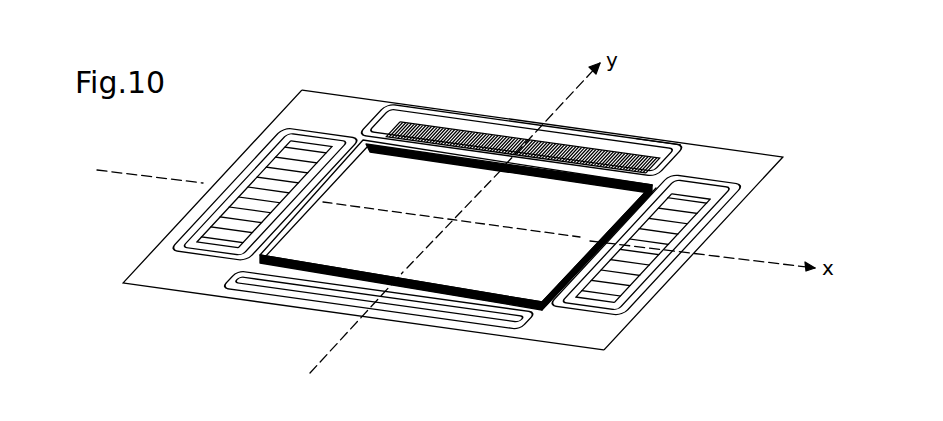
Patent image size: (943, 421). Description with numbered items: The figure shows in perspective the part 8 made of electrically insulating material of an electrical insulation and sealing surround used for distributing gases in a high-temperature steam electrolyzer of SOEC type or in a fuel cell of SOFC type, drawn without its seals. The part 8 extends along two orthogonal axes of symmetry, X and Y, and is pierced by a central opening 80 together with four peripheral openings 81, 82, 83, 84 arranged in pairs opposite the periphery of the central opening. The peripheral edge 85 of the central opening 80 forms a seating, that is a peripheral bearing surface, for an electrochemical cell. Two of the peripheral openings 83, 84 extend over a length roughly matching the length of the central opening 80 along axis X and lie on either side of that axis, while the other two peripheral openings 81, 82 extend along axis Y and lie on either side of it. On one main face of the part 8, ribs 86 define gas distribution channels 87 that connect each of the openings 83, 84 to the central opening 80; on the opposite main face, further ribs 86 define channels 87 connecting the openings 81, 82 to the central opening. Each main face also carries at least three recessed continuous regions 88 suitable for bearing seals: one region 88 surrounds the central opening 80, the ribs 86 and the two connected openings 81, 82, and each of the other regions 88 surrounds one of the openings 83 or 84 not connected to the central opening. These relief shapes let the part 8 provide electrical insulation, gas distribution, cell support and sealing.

The part made of electrically insulating material 8 is at (237, 338).
The central opening 80 is at (473, 274).
The peripheral opening 81 is at (632, 290).
The peripheral opening 82 is at (252, 163).
The peripheral opening 83 is at (467, 132).
The peripheral opening 84 is at (432, 305).
The peripheral edge 85 is at (638, 138).
The ribs 86 is at (263, 180).
The gas distribution channels 87 is at (260, 217).
The recessed continuous regions 88 is at (613, 137).